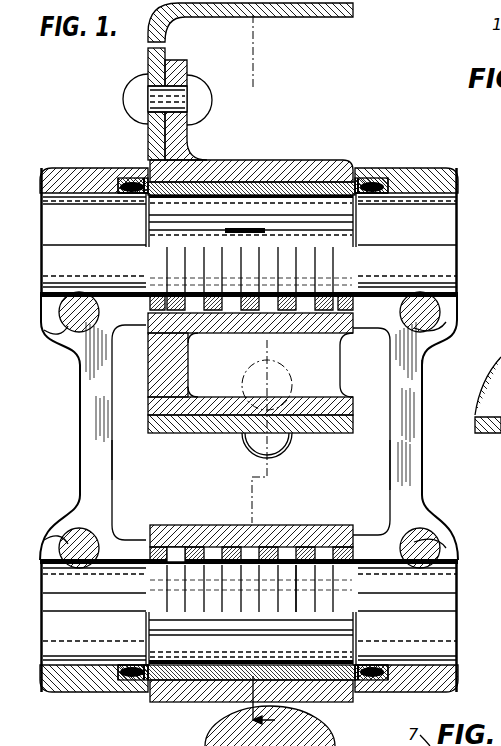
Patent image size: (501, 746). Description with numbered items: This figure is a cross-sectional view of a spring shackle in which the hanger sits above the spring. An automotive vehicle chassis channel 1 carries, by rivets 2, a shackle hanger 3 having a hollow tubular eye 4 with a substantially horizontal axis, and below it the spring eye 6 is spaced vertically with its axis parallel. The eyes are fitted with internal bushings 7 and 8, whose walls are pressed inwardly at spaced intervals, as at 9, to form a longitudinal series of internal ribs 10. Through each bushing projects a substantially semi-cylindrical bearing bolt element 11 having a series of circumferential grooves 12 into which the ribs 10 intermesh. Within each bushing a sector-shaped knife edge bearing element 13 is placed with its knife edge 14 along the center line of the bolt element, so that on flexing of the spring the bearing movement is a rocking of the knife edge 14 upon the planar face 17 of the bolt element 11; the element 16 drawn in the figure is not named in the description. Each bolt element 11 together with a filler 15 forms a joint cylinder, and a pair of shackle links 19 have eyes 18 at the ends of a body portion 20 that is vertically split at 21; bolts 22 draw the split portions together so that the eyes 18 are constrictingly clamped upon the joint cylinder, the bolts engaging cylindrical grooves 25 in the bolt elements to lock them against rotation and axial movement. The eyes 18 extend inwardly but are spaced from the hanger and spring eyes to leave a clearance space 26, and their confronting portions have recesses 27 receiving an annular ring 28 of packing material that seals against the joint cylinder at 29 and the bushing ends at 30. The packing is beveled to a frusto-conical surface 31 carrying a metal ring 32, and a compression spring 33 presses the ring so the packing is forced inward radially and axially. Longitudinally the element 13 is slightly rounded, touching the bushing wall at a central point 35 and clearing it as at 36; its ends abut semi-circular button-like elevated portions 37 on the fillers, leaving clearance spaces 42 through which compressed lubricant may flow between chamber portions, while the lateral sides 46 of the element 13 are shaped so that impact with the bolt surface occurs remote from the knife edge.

The automotive vehicle chassis channel 1 is at (353, 10).
The rivets 2 is at (200, 87).
The shackle hanger 3 is at (178, 63).
The hollow tubular eye 4 is at (280, 166).
The spring eye 6 is at (300, 553).
The internal bushing 7 is at (268, 184).
The internal bushing 8 is at (330, 705).
The inwardly pressed wall portions 9 is at (290, 313).
The internal ribs 10 is at (215, 313).
The bearing bolt element 11 is at (458, 267).
The circumferential grooves 12 is at (335, 276).
The knife edge bearing element 13 is at (300, 176).
The knife edge 14 is at (262, 235).
The filler 15 is at (62, 179).
The cylinder wall 16 is at (458, 248).
The planar face 17 is at (304, 241).
The eyes 18 is at (78, 172).
The shackle links 19 is at (82, 399).
The body portion 20 is at (95, 456).
The split 21 is at (93, 421).
The bolts 22 is at (65, 327).
The cylindrical grooves 25 is at (82, 294).
The clearance space 26 is at (145, 181).
The recesses 27 is at (123, 189).
The annular ring of packing material 28 is at (128, 183).
The sealing surface 29 is at (140, 202).
The sealing surface 30 is at (190, 171).
The frusto-conical surface 31 is at (122, 201).
The metal ring 32 is at (120, 181).
The compression spring 33 is at (118, 186).
The central point 35 is at (256, 166).
The clearance 36 is at (240, 187).
The button-like elevated portions 37 is at (145, 247).
The clearance space 42 is at (146, 225).
The lateral sides 46 is at (215, 233).